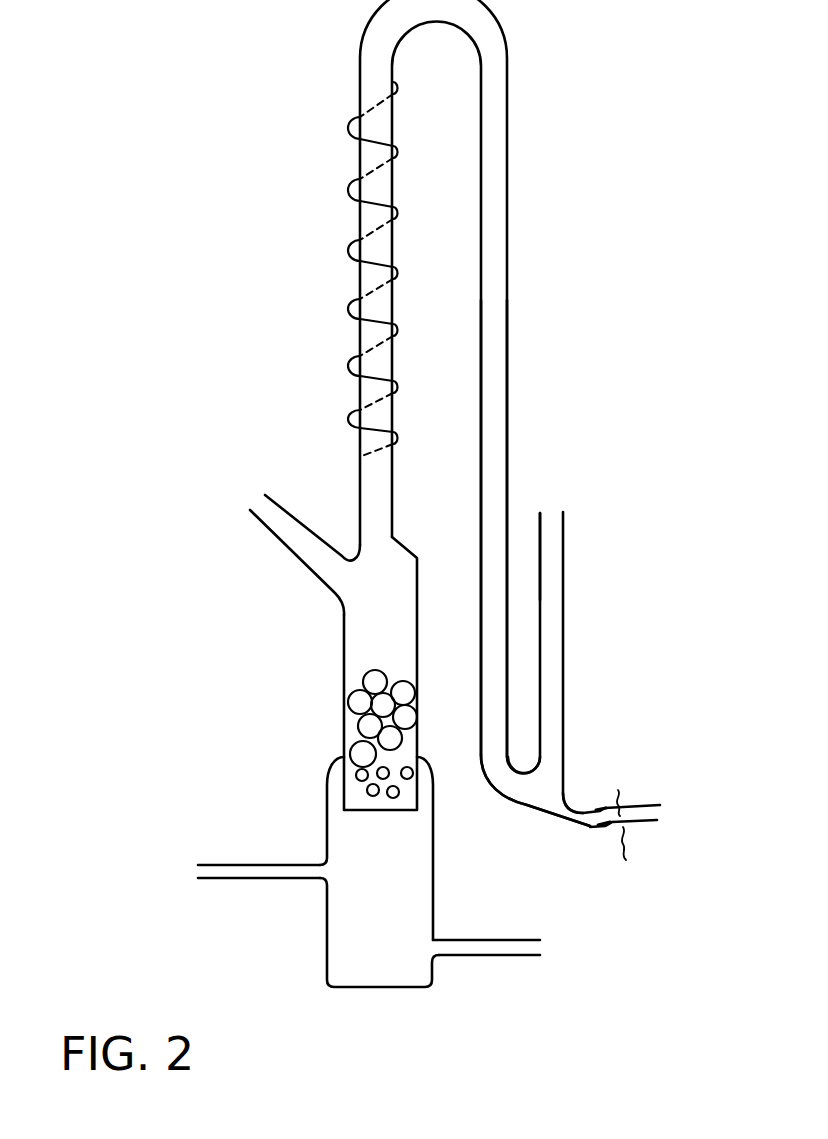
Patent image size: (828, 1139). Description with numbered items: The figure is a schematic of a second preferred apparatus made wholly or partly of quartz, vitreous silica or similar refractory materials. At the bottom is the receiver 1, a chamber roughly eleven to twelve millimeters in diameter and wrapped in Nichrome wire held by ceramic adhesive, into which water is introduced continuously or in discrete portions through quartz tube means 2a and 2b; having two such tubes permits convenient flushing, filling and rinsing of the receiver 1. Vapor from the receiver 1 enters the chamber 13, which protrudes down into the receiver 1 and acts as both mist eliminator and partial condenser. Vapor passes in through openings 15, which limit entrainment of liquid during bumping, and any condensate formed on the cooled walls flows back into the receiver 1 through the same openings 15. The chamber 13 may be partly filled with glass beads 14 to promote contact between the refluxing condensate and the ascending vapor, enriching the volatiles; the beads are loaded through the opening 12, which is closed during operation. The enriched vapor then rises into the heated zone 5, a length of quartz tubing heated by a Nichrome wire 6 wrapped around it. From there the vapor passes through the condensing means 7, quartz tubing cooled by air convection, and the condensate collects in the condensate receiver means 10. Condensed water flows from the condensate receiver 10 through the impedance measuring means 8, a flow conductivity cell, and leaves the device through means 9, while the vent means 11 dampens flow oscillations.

The receiver 1 is at (323, 955).
The quartz tube means 2a is at (197, 870).
The quartz tube means 2b is at (542, 945).
The heated zone 5 is at (360, 220).
The Nichrome wire 6 is at (391, 80).
The condensing means 7 is at (508, 210).
The impedance measuring means 8 is at (622, 795).
The means 9 is at (660, 812).
The condensate receiver means 10 is at (531, 812).
The vent means 11 is at (542, 508).
The opening 12 is at (257, 503).
The chamber 13 is at (342, 673).
The glass beads 14 is at (352, 728).
The openings 15 is at (355, 783).